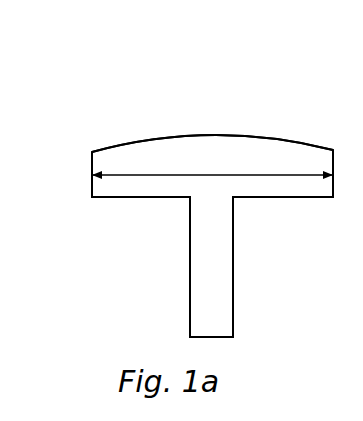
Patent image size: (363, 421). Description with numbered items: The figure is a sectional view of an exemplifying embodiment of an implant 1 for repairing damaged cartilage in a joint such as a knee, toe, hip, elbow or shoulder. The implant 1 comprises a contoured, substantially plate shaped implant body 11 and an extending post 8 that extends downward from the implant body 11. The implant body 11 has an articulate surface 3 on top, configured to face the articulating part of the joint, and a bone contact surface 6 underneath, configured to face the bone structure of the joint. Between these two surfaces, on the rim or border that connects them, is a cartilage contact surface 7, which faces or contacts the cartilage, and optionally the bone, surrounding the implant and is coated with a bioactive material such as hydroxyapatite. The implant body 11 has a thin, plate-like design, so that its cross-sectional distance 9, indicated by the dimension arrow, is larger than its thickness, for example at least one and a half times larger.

The implant 1 is at (136, 100).
The articulate surface 3 is at (240, 136).
The bone contact surface 6 is at (175, 197).
The cartilage contact surface 7 is at (92, 174).
The extending post 8 is at (212, 267).
The cross-sectional distance 9 is at (292, 174).
The implant body 11 is at (187, 153).